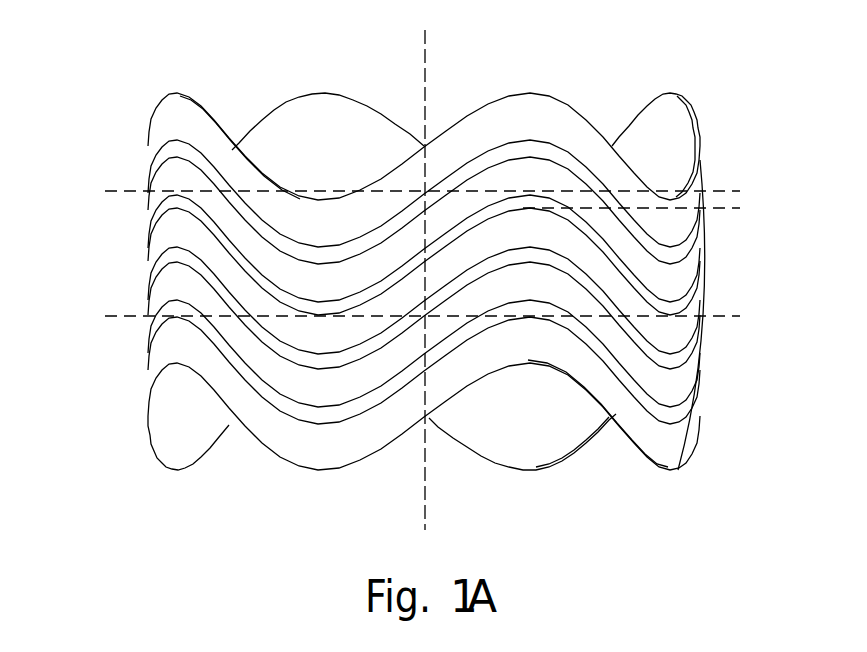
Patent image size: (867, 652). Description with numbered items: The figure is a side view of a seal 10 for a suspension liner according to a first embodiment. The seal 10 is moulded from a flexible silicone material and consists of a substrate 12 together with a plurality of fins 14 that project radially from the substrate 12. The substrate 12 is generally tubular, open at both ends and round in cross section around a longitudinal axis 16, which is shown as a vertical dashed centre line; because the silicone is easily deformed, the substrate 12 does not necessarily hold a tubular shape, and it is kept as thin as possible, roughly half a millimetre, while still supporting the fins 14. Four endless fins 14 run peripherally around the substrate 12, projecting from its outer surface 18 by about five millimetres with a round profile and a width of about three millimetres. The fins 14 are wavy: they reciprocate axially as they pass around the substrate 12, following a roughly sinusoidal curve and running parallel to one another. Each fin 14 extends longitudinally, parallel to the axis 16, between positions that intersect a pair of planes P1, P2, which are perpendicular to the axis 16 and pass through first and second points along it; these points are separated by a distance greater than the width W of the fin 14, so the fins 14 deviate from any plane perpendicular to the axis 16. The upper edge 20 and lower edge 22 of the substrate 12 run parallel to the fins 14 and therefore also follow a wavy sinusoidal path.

The seal 10 is at (135, 112).
The substrate 12 is at (285, 440).
The fins 14 is at (703, 362).
The longitudinal axis 16 is at (425, 55).
The outer surface 18 is at (688, 444).
The upper edge 20 is at (685, 93).
The lower edge 22 is at (553, 468).
The first plane P1 is at (402, 192).
The second plane P2 is at (397, 314).
The width of the fin W is at (735, 240).